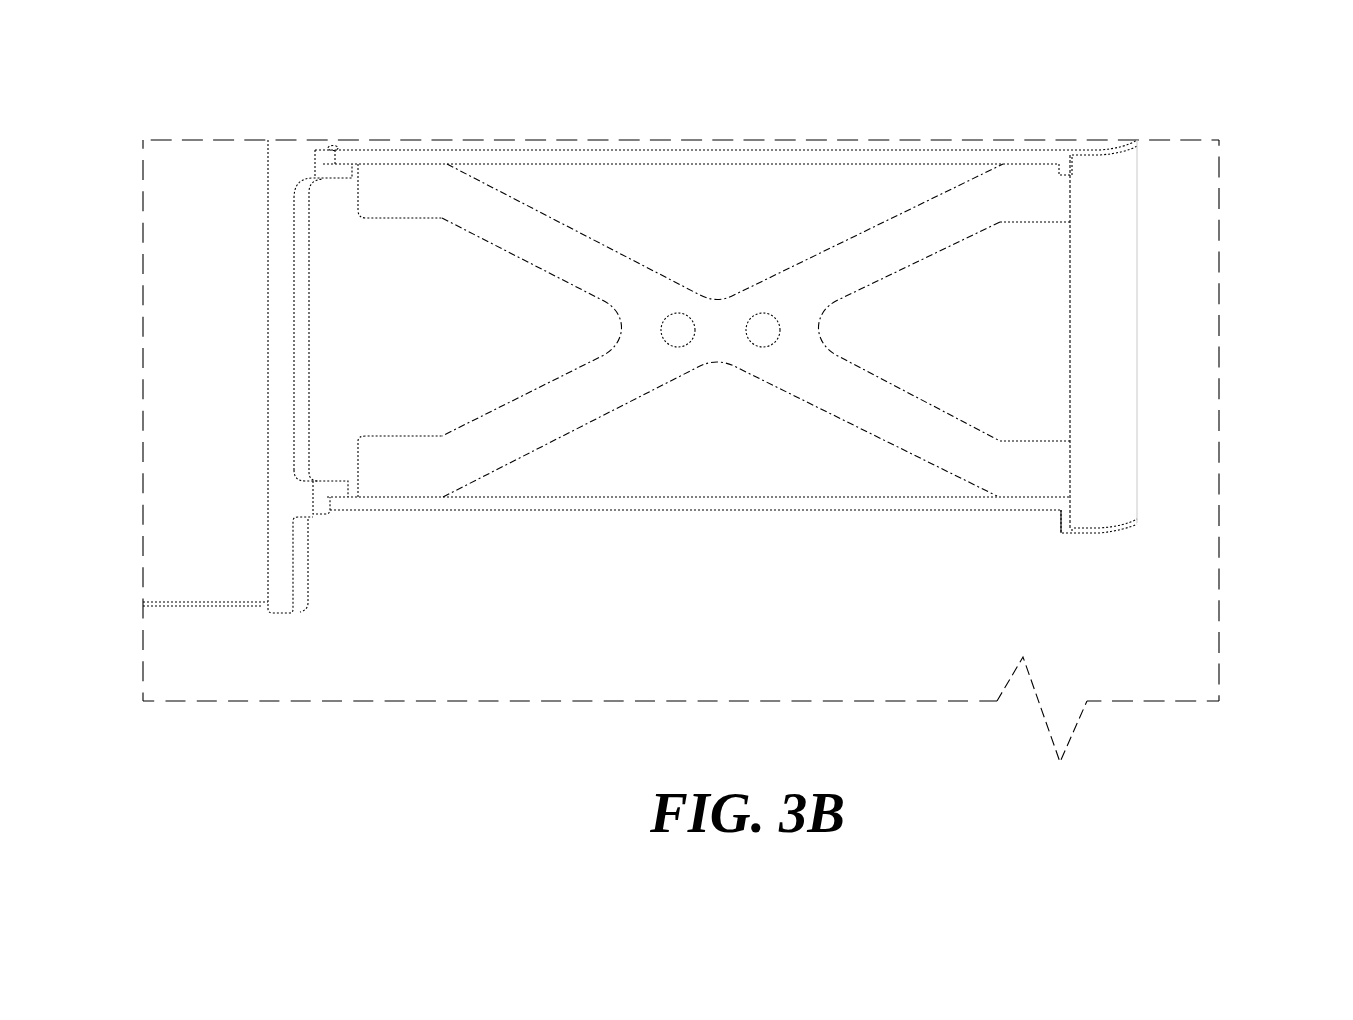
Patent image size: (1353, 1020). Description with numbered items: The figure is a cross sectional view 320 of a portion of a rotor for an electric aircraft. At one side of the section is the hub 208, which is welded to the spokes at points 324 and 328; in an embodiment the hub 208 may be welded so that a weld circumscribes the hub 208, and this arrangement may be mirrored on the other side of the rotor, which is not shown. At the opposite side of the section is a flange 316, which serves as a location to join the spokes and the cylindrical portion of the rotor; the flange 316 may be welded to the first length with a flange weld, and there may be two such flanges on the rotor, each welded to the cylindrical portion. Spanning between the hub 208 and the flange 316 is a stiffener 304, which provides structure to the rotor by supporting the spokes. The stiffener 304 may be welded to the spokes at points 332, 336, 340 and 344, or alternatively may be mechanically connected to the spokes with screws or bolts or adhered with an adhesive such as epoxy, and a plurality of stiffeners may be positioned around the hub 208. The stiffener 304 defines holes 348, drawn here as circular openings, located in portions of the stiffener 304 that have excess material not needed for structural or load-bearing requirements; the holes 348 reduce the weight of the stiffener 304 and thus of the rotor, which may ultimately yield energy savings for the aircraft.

The hub 208 is at (205, 603).
The stiffeners 304 is at (963, 212).
The flange 316 is at (1072, 170).
The cross sectional view 320 is at (659, 99).
The weld point 324 is at (333, 146).
The weld point 328 is at (333, 510).
The weld point 332 is at (414, 150).
The weld point 336 is at (1025, 164).
The weld point 340 is at (393, 500).
The weld point 344 is at (1030, 498).
The holes 348 is at (682, 322).